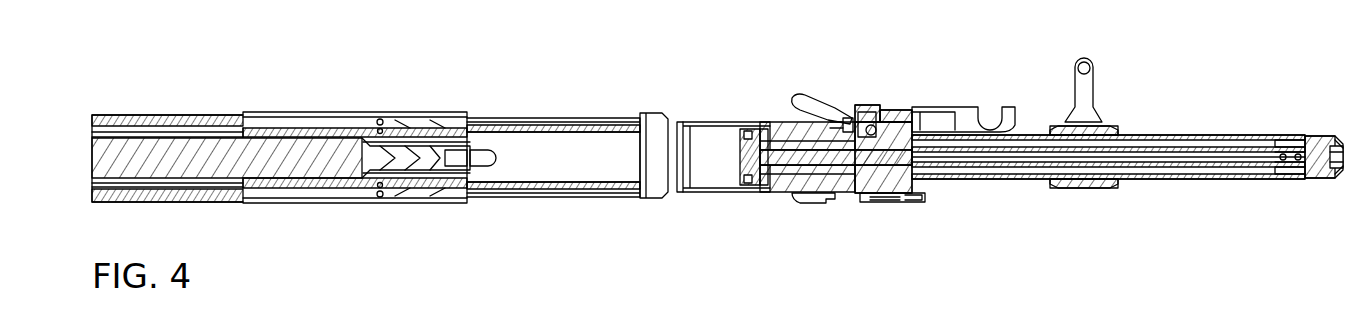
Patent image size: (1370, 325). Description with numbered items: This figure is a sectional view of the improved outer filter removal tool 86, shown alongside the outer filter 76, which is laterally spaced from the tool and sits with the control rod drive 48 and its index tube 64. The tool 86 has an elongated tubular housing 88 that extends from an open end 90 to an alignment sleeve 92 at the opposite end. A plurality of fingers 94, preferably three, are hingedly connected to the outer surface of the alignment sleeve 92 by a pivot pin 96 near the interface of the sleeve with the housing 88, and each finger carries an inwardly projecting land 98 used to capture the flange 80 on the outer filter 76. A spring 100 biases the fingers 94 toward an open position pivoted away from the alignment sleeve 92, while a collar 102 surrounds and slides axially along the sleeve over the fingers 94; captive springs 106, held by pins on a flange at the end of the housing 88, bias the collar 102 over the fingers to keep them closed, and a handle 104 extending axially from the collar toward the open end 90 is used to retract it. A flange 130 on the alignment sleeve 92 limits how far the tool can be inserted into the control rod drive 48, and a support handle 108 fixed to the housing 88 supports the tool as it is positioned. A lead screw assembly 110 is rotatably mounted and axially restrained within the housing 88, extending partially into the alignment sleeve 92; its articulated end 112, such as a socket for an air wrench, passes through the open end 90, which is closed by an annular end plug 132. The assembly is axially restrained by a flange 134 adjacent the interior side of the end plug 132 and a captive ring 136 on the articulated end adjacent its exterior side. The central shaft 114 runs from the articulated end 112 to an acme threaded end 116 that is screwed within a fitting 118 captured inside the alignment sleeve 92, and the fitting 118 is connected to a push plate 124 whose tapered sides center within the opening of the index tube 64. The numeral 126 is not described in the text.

The control rod drive 48 is at (328, 112).
The index tube 64 is at (530, 124).
The outer filter 76 is at (556, 120).
The flange 80 is at (652, 200).
The alignment sleeve 92 is at (682, 120).
The seal ring 126 is at (748, 130).
The inwardly projecting land 98 is at (795, 112).
The fingers 94 is at (818, 96).
The spring 100 is at (860, 112).
The collar 102 is at (872, 118).
The pivot pin 96 is at (896, 120).
The handle 104 is at (958, 108).
The support handle 108 is at (1088, 82).
The outer filter removal tool 86 is at (1128, 113).
The tubular housing 88 is at (1160, 134).
The lead screw assembly 110 is at (1196, 148).
The articulated end 112 is at (1340, 140).
The captive ring 136 is at (1336, 142).
The annular end plug 132 is at (1322, 140).
The flange 134 is at (1300, 172).
The open end 90 is at (1340, 178).
The central shaft 114 is at (1188, 152).
The captive springs 106 is at (905, 200).
The acme threaded end 116 is at (852, 200).
The flange 130 is at (826, 203).
The fitting 118 is at (782, 200).
The push plate 124 is at (726, 192).